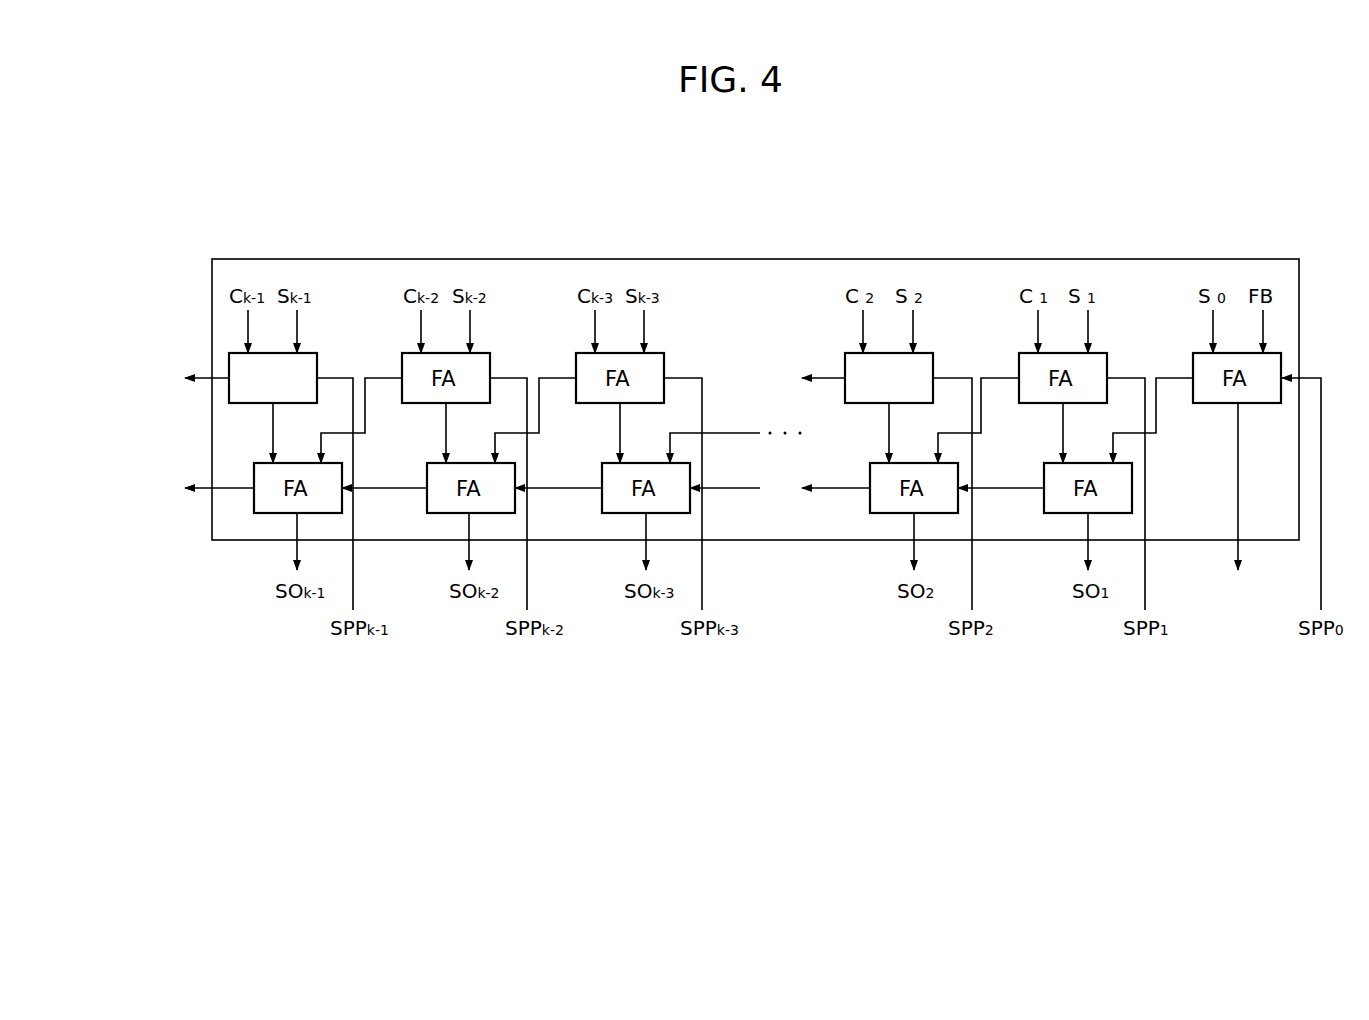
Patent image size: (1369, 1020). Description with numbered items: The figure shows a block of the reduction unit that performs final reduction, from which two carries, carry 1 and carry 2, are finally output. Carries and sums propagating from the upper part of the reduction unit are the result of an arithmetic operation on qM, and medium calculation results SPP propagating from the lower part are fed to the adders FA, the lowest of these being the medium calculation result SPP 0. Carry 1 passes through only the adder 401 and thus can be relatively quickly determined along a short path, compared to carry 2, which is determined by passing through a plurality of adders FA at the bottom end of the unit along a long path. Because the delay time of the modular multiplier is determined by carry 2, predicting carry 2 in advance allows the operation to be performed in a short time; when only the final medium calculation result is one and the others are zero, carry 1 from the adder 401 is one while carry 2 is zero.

The adder 401 is at (317, 363).
The carry 1 is at (456, 380).
The carry 2 is at (471, 490).
The sum output bit 0 is at (1240, 503).